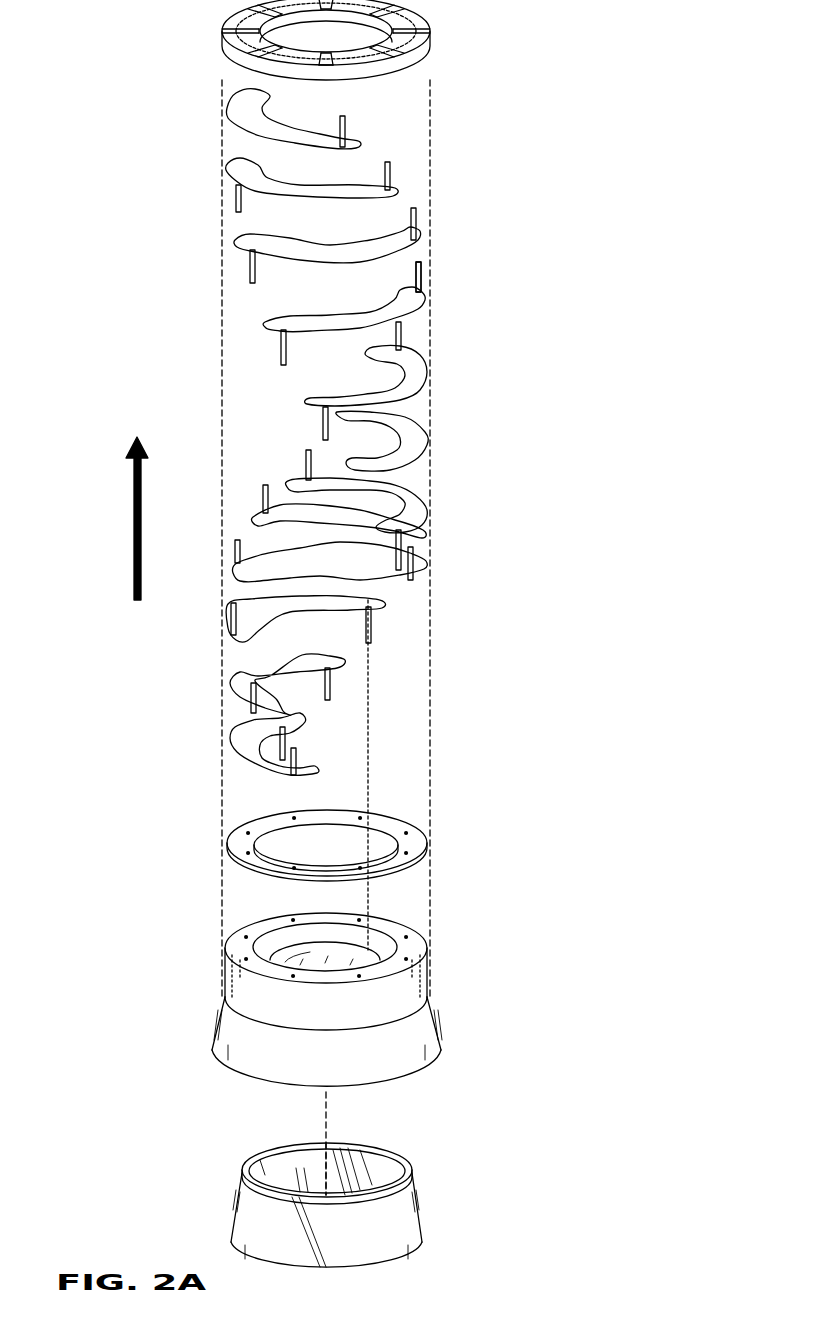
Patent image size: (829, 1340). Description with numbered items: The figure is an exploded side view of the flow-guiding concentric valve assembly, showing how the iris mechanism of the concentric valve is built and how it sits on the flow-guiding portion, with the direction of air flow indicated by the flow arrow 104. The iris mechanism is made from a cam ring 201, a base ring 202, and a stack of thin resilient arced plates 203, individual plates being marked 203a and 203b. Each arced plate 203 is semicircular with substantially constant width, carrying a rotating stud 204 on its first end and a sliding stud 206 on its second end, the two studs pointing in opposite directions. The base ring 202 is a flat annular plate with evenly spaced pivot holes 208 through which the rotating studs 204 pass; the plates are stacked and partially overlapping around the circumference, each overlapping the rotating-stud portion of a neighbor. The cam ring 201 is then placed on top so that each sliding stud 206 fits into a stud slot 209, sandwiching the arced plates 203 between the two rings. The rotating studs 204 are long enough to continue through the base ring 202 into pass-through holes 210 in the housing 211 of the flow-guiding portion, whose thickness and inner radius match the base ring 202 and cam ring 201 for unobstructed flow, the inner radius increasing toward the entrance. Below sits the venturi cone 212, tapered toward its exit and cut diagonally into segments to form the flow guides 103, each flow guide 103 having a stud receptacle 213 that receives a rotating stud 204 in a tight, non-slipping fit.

The cam ring 201 is at (430, 36).
The stud slot 209 is at (258, 6).
The flow arrow 104 is at (128, 521).
The arced plate 203 is at (316, 432).
The curved vane 203a is at (320, 334).
The vane 203b is at (283, 318).
The rotating stud 204 is at (281, 340).
The sliding stud 206 is at (425, 271).
The base ring 202 is at (410, 831).
The pivot hole 208 is at (245, 845).
The pass-through hole 210 is at (246, 951).
The housing 211 is at (234, 982).
The venturi cone 212 is at (332, 1196).
The stud receptacle 213 is at (297, 1195).
The flow guide 103 is at (240, 1203).